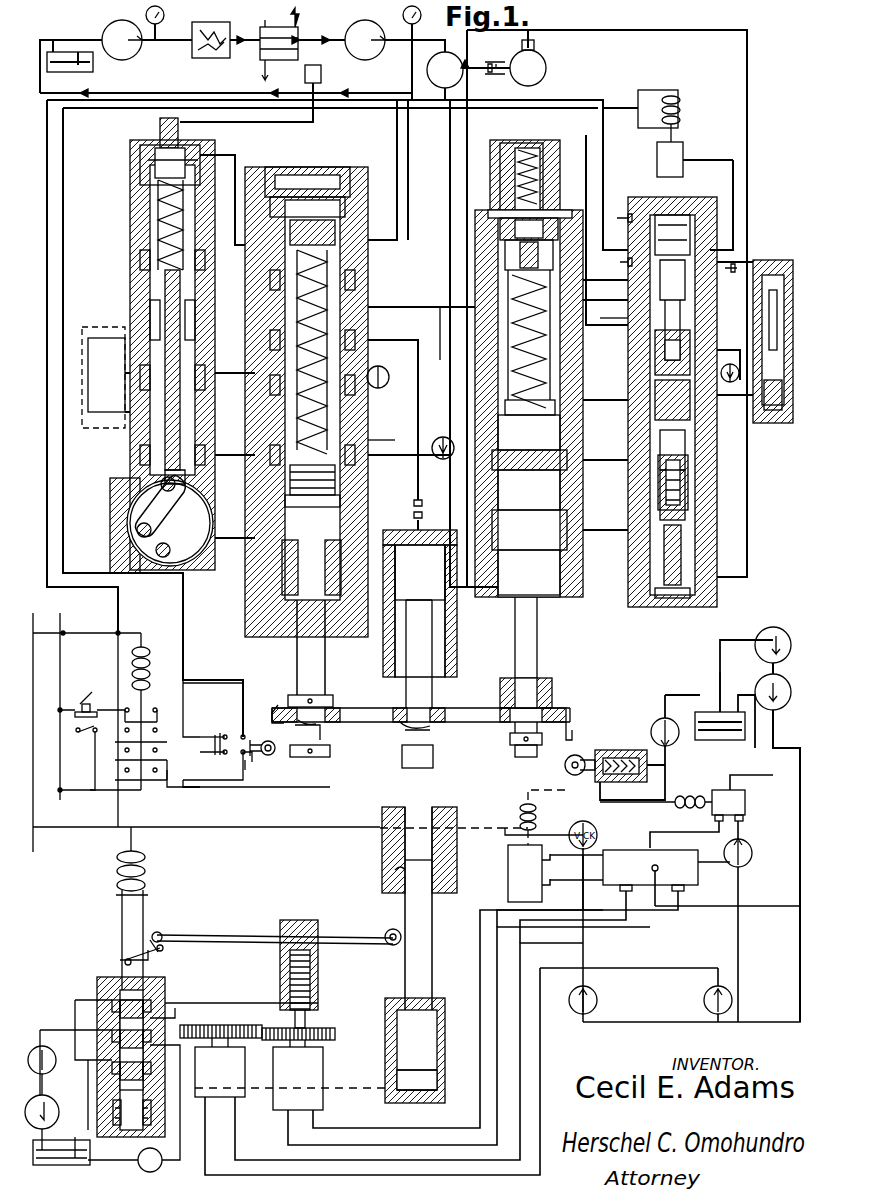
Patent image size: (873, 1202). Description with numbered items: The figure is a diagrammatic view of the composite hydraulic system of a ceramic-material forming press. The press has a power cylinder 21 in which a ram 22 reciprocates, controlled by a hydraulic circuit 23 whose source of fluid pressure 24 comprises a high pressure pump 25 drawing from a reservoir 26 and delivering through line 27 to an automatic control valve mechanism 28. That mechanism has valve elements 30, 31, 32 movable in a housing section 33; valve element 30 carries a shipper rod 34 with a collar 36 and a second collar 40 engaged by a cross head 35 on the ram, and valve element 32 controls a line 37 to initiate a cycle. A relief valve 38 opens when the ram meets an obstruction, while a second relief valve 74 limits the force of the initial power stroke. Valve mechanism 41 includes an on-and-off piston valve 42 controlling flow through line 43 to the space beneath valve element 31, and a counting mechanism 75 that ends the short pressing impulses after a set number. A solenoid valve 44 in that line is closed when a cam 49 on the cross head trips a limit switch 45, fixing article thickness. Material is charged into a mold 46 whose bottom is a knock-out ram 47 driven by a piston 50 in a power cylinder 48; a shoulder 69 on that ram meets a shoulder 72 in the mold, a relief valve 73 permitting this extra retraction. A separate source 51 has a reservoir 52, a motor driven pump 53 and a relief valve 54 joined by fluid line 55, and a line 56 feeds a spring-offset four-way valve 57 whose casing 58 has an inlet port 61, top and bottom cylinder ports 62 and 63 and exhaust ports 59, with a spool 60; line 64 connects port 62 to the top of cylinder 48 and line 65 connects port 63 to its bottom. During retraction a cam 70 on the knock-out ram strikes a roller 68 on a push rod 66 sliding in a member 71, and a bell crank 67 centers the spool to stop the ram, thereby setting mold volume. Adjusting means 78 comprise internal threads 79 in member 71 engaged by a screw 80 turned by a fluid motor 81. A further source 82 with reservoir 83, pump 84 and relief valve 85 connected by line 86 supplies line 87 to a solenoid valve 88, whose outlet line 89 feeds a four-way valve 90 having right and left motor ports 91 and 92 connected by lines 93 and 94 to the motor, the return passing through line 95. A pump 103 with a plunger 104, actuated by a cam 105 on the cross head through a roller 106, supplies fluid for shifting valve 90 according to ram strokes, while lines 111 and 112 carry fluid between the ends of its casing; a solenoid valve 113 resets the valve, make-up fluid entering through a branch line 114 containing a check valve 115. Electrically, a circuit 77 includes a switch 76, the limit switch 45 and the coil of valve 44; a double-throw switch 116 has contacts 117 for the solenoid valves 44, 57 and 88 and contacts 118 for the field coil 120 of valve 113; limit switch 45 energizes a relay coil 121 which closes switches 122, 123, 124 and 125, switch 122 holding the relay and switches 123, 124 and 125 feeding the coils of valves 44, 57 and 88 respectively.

The power cylinder 21 is at (454, 618).
The ram 22 is at (406, 697).
The hydraulic circuit 23 is at (572, 92).
The source of fluid pressure 24 is at (156, 61).
The high pressure pump 25 is at (350, 32).
The reservoir 26 is at (93, 70).
The line 27 is at (407, 80).
The automatic control valve mechanism 28 is at (116, 274).
The valve element 30 is at (284, 481).
The valve element 31 is at (280, 322).
The valve element 32 is at (195, 352).
The housing section 33 is at (140, 220).
The shipper rod 34 is at (297, 660).
The cross head 35 is at (392, 745).
The collar 36 is at (328, 696).
The line 37 is at (120, 334).
The relief valve 38 is at (445, 52).
The second collar 40 is at (330, 753).
The valve mechanism 41 is at (728, 262).
The on and off piston valve 42 is at (637, 302).
The line 43 is at (732, 174).
The solenoid valve 44 is at (679, 108).
The limit switch 45 is at (252, 763).
The mold 46 is at (386, 845).
The knock-out ram 47 is at (396, 887).
The power cylinder 48 is at (385, 1060).
The cam 49 is at (281, 706).
The piston 50 is at (423, 1070).
The source of fluid pressure 51 is at (97, 1167).
The reservoir 52 is at (90, 1150).
The motor driven pump 53 is at (40, 1100).
The relief valve 54 is at (40, 1051).
The fluid line 55 is at (42, 1085).
The fluid line 56 is at (65, 1022).
The four-way valve 57 is at (103, 874).
The casing 58 is at (148, 992).
The exhaust ports 59 is at (115, 990).
The spool 60 is at (160, 958).
The inlet port 61 is at (111, 1010).
The top cylinder port 62 is at (150, 1014).
The bottom cylinder port 63 is at (145, 1053).
The line 64 is at (246, 1002).
The line 65 is at (257, 1088).
The push rod 66 is at (250, 932).
The bell crank 67 is at (125, 952).
The roller 68 is at (387, 941).
The shoulder 69 is at (402, 868).
The cam 70 is at (390, 930).
The member 71 is at (292, 920).
The shoulder 72 is at (442, 886).
The relief valve 73 is at (162, 1166).
The second relief valve 74 is at (545, 63).
The counting mechanism 75 is at (696, 472).
The switch 76 is at (228, 734).
The circuit 77 is at (230, 711).
The adjusting means 78 is at (322, 999).
The internal threads 79 is at (290, 960).
The screw 80 is at (290, 988).
The fluid motor 81 is at (306, 1077).
The source of fluid pressure 82 is at (750, 618).
The reservoir 83 is at (734, 703).
The pump 84 is at (767, 628).
The relief valve 85 is at (762, 676).
The line 86 is at (775, 668).
The line 87 is at (776, 732).
The solenoid valve 88 is at (712, 792).
The line 89 is at (710, 836).
The four-way valve 90 is at (628, 850).
The right motor port 91 is at (648, 894).
The left motor port 92 is at (576, 902).
The line 93 is at (498, 975).
The line 94 is at (478, 948).
The line 95 is at (751, 917).
The pump 103 is at (627, 750).
The plunger 104 is at (622, 747).
The cam 105 is at (567, 722).
The roller 106 is at (565, 769).
The combined inlet and outlet line 111 is at (205, 1168).
The combined inlet and outlet line 112 is at (263, 1160).
The solenoid valve 113 is at (508, 870).
The branch line 114 is at (720, 975).
The check valve 115 is at (732, 1000).
The manually operated switch 116 is at (93, 680).
The contacts 117 is at (93, 709).
The contacts 118 is at (78, 758).
The field coil 120 is at (520, 815).
The relay coil 121 is at (134, 656).
The switch 122 is at (126, 713).
The switch 123 is at (155, 734).
The switch 124 is at (155, 752).
The switch 125 is at (125, 773).